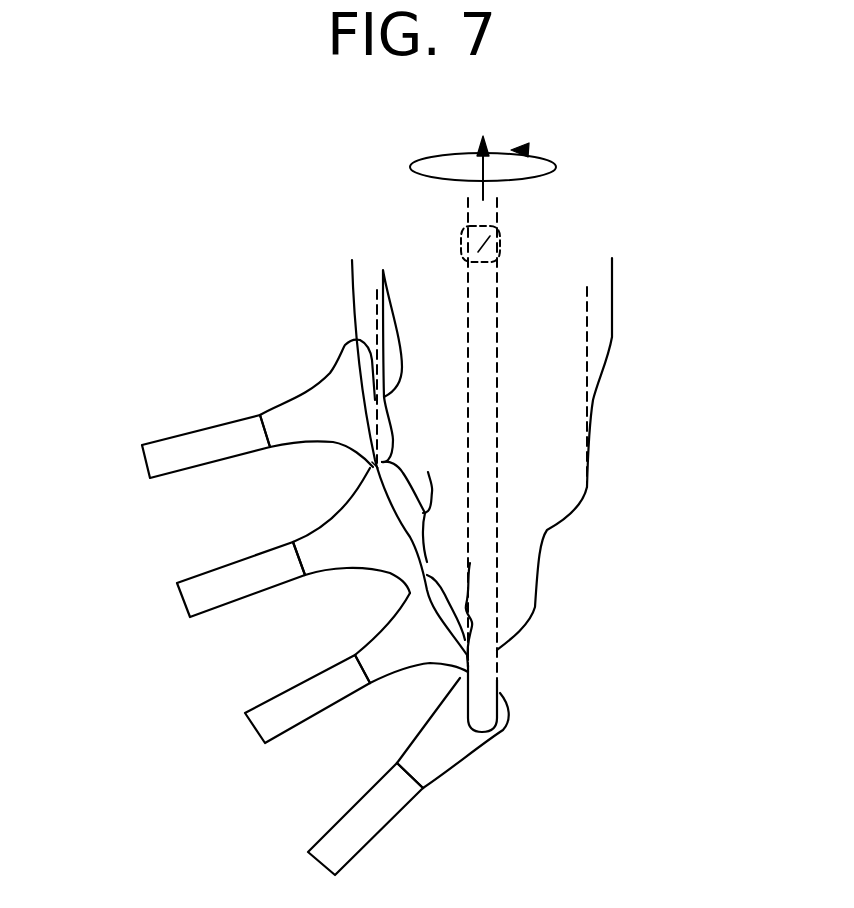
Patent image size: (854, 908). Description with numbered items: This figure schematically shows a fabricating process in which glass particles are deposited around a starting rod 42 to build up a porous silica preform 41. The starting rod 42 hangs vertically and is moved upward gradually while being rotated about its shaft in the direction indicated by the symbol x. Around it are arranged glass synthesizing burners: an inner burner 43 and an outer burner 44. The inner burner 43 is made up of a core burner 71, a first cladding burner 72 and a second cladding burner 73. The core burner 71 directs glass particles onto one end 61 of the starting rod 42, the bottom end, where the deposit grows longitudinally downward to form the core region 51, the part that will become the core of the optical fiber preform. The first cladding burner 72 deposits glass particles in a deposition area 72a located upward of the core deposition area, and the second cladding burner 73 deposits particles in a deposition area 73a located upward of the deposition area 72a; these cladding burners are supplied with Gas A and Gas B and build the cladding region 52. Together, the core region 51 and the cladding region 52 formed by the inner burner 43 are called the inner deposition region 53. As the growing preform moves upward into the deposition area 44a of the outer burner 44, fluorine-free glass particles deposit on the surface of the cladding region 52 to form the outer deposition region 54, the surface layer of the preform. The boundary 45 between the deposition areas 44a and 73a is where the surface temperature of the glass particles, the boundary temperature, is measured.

The porous silica preform 41 is at (588, 490).
The starting rod 42 is at (500, 228).
The inner burner 43 is at (80, 603).
The outer burner 44 is at (187, 443).
The deposition area of the outer burner 44a is at (395, 398).
The boundary of deposition areas 45 is at (374, 463).
The core region 51 is at (483, 672).
The cladding region 52 is at (527, 515).
The inner deposition region 53 is at (728, 612).
The outer deposition region 54 is at (604, 334).
The one end of the starting rod 61 is at (500, 247).
The core burner 71 is at (330, 832).
The first cladding burner 72 is at (262, 730).
The deposition area of the first cladding burner 72a is at (468, 594).
The second cladding burner 73 is at (180, 603).
The deposition area of the second cladding burner 73a is at (434, 476).